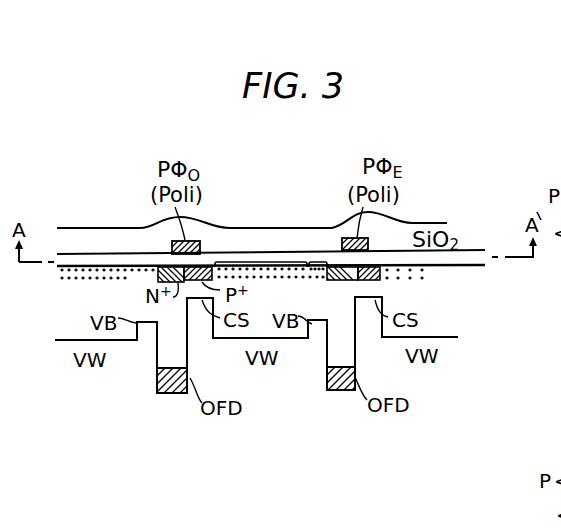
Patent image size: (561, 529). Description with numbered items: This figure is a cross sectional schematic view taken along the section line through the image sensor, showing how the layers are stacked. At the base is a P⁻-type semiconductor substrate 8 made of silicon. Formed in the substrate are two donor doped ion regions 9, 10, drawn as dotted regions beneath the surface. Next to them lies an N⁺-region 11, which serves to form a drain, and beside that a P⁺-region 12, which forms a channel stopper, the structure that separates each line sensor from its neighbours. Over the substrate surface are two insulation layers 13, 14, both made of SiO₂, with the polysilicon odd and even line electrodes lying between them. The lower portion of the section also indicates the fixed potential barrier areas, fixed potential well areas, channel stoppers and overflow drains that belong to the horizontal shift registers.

The P⁻-type semiconductor substrate 8 is at (482, 272).
The donor doped ion region 9 is at (267, 262).
The donor doped ion region 10 is at (310, 262).
The N⁺-region 11 is at (347, 282).
The P⁺-region 12 is at (375, 280).
The insulation layer 13 is at (400, 232).
The insulation layer 14 is at (462, 258).